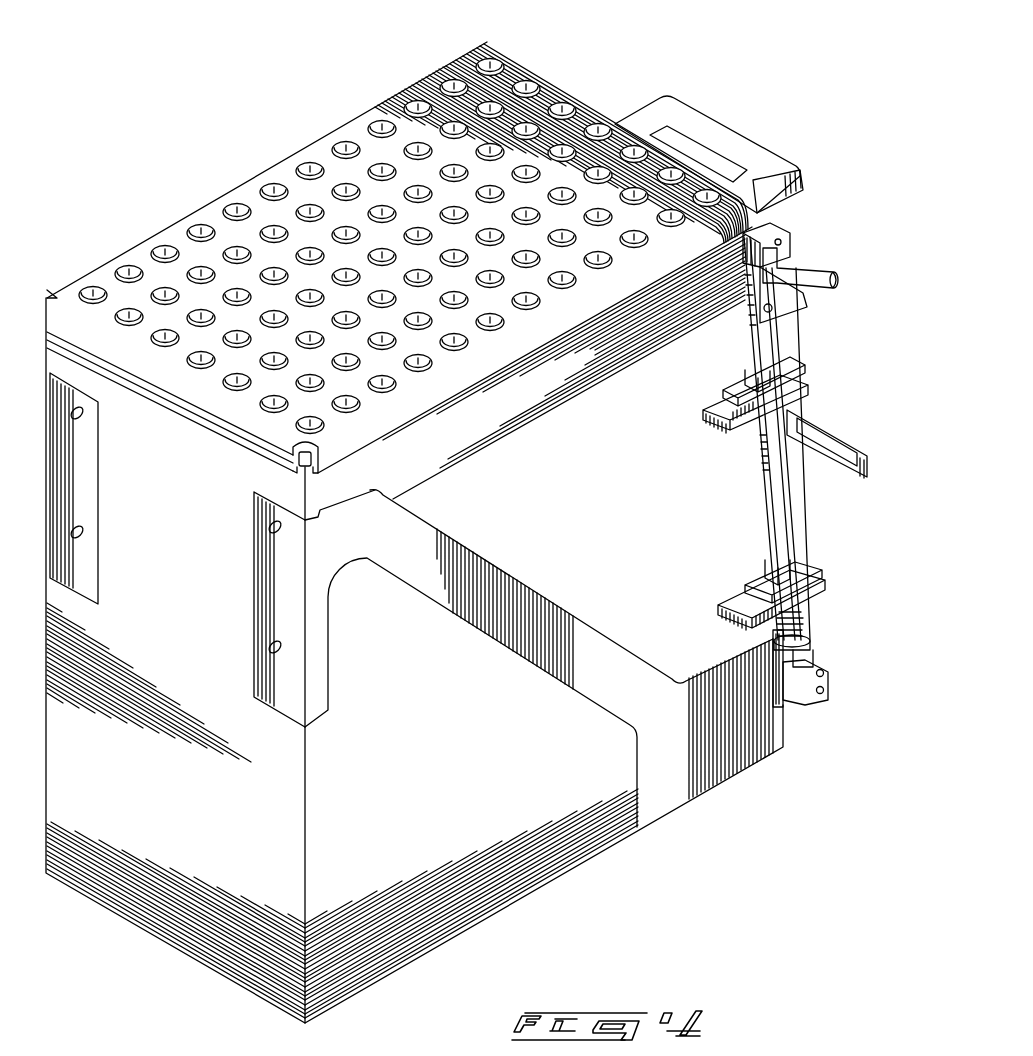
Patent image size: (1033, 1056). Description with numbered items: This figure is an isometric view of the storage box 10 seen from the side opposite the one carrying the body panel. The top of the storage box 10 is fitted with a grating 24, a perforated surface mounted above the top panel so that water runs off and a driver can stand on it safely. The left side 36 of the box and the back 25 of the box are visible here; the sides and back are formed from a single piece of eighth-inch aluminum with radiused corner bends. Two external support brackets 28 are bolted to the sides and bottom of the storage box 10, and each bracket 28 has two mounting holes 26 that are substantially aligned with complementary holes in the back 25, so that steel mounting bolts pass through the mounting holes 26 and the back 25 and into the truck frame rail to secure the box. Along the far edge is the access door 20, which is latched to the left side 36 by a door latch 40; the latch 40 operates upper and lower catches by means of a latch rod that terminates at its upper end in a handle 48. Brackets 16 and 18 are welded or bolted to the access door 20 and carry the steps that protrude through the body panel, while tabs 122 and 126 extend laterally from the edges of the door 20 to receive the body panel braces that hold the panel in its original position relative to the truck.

The storage box 10 is at (193, 93).
The grating 24 is at (558, 77).
The bracket 18 is at (752, 155).
The tab 122 is at (787, 224).
The handle 48 is at (803, 251).
The bracket 16 is at (833, 440).
The door latch 40 is at (738, 496).
The access door 20 is at (816, 531).
The external support bracket 28 is at (78, 456).
The mounting holes 26 is at (87, 530).
The left side 36 is at (574, 558).
The back 25 is at (175, 750).
The tab 126 is at (828, 690).